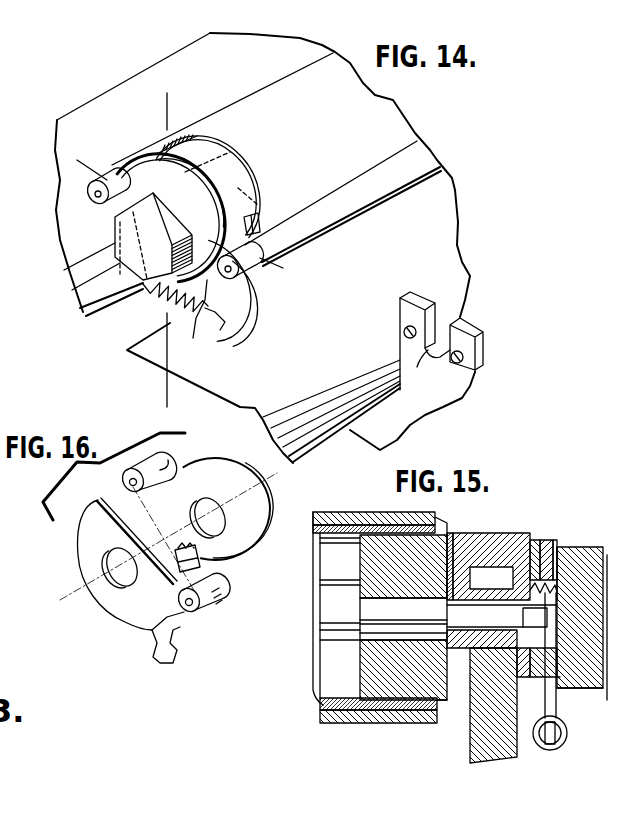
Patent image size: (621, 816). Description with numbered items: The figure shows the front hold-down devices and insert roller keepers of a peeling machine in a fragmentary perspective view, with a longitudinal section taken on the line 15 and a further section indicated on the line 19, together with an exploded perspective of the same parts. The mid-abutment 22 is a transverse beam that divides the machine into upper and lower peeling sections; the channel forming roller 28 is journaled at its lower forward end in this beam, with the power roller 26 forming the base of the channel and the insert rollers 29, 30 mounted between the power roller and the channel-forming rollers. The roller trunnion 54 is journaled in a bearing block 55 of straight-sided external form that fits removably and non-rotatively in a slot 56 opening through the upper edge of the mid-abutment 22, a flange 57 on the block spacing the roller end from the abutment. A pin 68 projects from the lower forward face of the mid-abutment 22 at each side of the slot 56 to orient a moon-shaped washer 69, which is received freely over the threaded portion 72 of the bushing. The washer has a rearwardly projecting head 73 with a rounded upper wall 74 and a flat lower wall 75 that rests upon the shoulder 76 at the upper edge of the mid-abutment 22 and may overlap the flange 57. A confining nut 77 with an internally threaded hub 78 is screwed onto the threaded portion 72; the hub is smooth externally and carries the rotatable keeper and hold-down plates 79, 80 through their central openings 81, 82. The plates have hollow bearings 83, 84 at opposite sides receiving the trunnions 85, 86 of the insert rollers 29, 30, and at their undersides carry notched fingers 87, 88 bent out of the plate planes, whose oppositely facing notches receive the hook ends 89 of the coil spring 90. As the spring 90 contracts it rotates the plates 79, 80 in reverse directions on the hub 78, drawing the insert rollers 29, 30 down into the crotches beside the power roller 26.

In FIG. 14, the section line 15- 15 is at (190, 107).
In FIG. 14, the section line 19- 19 is at (77, 185).
In FIG. 14, the mid-abutment 22 is at (407, 413).
In FIG. 15, the mid-abutment 22 is at (495, 748).
In FIG. 14, the power roller 26 is at (197, 53).
In FIG. 14, the channel forming roller 28 is at (378, 113).
In FIG. 15, the channel forming roller 28 is at (328, 722).
In FIG. 14, the insert roller 29 is at (287, 78).
In FIG. 14, the insert roller 30 is at (383, 170).
In FIG. 15, the trunnion 54 is at (477, 615).
In FIG. 15, the bearing block 55 is at (526, 630).
In FIG. 14, the slot 56 is at (437, 347).
In FIG. 15, the flange 57 is at (454, 540).
In FIG. 14, the pin 68 is at (404, 330).
In FIG. 14, the moon-shaped washer 69 is at (267, 220).
In FIG. 15, the moon-shaped washer 69 is at (530, 680).
In FIG. 15, the threaded portion 72 is at (535, 617).
In FIG. 15, the washer head 73 is at (490, 538).
In FIG. 14, the rounded upper wall 74 is at (213, 160).
In FIG. 15, the rounded upper wall 74 is at (505, 562).
In FIG. 15, the flat lower wall 75 is at (550, 580).
In FIG. 14, the shoulder 76 is at (420, 302).
In FIG. 15, the confining nut 77 is at (590, 672).
In FIG. 15, the hub 78 is at (567, 580).
In FIG. 14, the keeper and hold-down plate 79 is at (203, 207).
In FIG. 16, the keeper and hold-down plate 79 is at (258, 518).
In FIG. 15, the keeper and hold-down plate 79 is at (568, 688).
In FIG. 14, the keeper and hold-down plate 80 is at (250, 337).
In FIG. 16, the keeper and hold-down plate 80 is at (137, 607).
In FIG. 15, the keeper and hold-down plate 80 is at (557, 680).
In FIG. 16, the central opening 81 is at (232, 540).
In FIG. 16, the central opening 82 is at (100, 563).
In FIG. 14, the hollow bearing 83 is at (113, 170).
In FIG. 16, the hollow bearing 83 is at (162, 456).
In FIG. 14, the hollow bearing 84 is at (252, 250).
In FIG. 16, the hollow bearing 84 is at (208, 614).
In FIG. 14, the trunnion 85 is at (92, 197).
In FIG. 14, the trunnion 86 is at (257, 300).
In FIG. 14, the notched finger 87 is at (140, 290).
In FIG. 16, the notched finger 87 is at (200, 562).
In FIG. 14, the notched finger 88 is at (223, 330).
In FIG. 16, the notched finger 88 is at (155, 668).
In FIG. 14, the hook end 89 is at (193, 340).
In FIG. 15, the hook end 89 is at (533, 716).
In FIG. 14, the coil spring 90 is at (170, 308).
In FIG. 15, the coil spring 90 is at (548, 746).